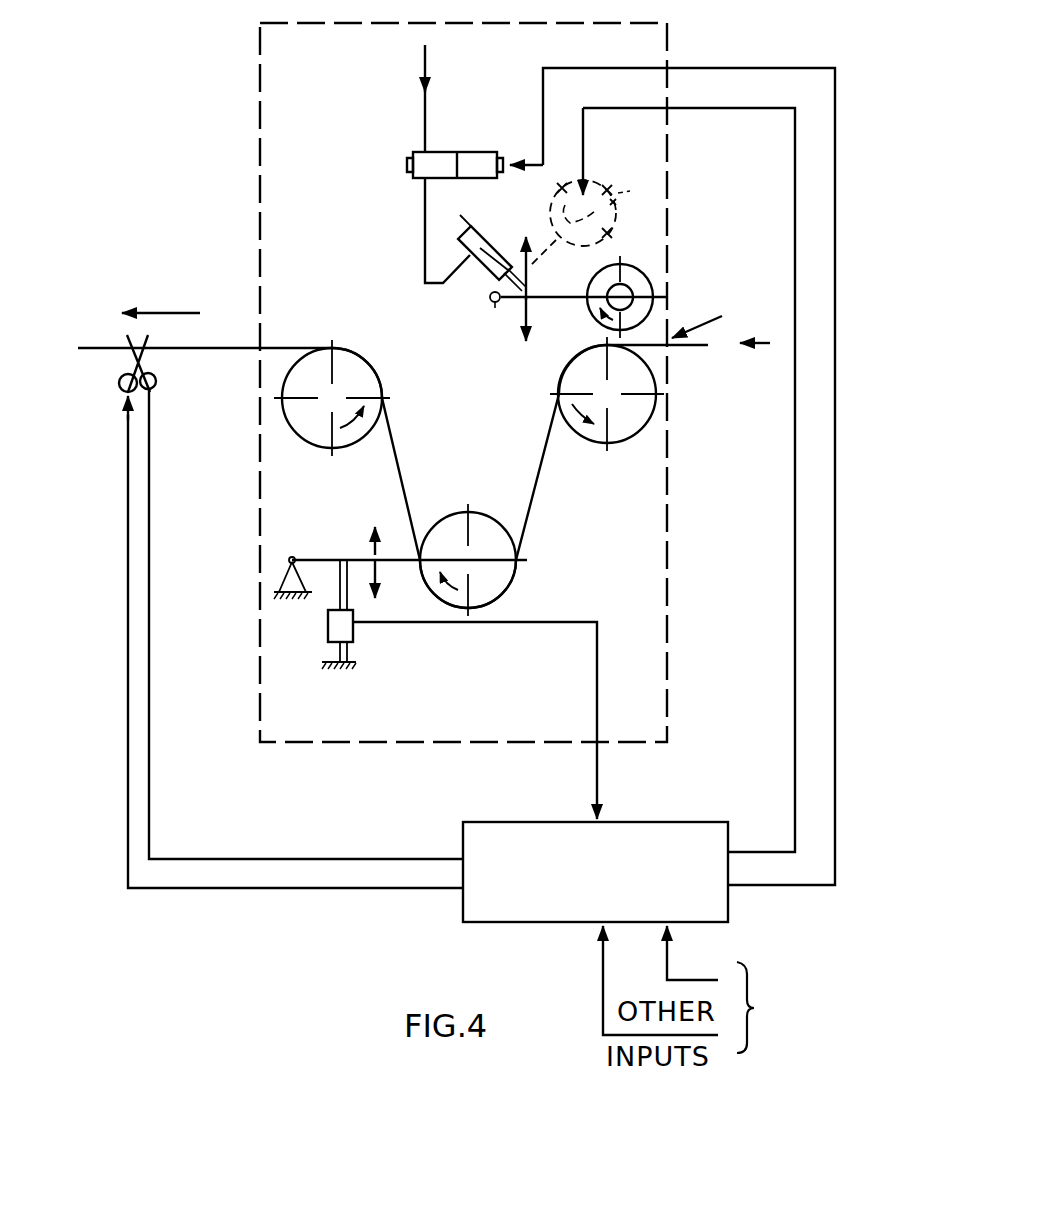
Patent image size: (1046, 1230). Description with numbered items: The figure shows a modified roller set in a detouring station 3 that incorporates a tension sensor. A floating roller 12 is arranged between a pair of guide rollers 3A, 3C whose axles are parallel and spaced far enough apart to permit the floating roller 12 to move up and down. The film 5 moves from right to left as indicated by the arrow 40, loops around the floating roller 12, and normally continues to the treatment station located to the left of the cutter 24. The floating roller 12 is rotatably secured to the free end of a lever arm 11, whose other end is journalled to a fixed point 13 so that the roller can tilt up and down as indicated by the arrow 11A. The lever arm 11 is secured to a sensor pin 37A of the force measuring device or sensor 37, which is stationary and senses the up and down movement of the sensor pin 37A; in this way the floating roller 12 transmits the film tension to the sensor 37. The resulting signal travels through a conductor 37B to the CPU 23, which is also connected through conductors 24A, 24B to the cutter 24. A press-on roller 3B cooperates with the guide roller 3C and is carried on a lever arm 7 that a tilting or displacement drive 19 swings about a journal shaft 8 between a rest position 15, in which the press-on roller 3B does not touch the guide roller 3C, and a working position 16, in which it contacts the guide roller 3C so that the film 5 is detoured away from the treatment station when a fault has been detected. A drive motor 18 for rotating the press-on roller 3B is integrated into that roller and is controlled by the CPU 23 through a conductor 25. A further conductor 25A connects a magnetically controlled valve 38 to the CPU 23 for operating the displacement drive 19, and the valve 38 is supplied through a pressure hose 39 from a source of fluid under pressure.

The detouring station 3 is at (261, 50).
The film 5 is at (211, 349).
The lever arm 7 is at (543, 300).
The journal shaft 8 is at (503, 290).
The lever arm 11 is at (331, 558).
The arrow 11A is at (405, 572).
The floating roller 12 is at (498, 578).
The fixed point 13 is at (292, 558).
The rest position 15 is at (614, 172).
The working position 16 is at (714, 313).
The drive motor 18 is at (639, 188).
The tilting or displacement drive 19 is at (478, 270).
The CPU 23 is at (462, 909).
The cutter 24 is at (125, 371).
The conductor 24A is at (128, 702).
The conductor 24B is at (149, 748).
The conductor 25 is at (731, 480).
The conductor 25A is at (838, 481).
The guide roller 3A is at (305, 439).
The press-on roller 3B is at (636, 285).
The guide roller 3C is at (637, 413).
The force measuring device or sensor 37 is at (330, 636).
The sensor pin 37A is at (346, 588).
The conductor 37B is at (596, 772).
The magnetically controlled valve 38 is at (470, 152).
The pressure hose 39 is at (423, 130).
The arrow 40 is at (155, 312).